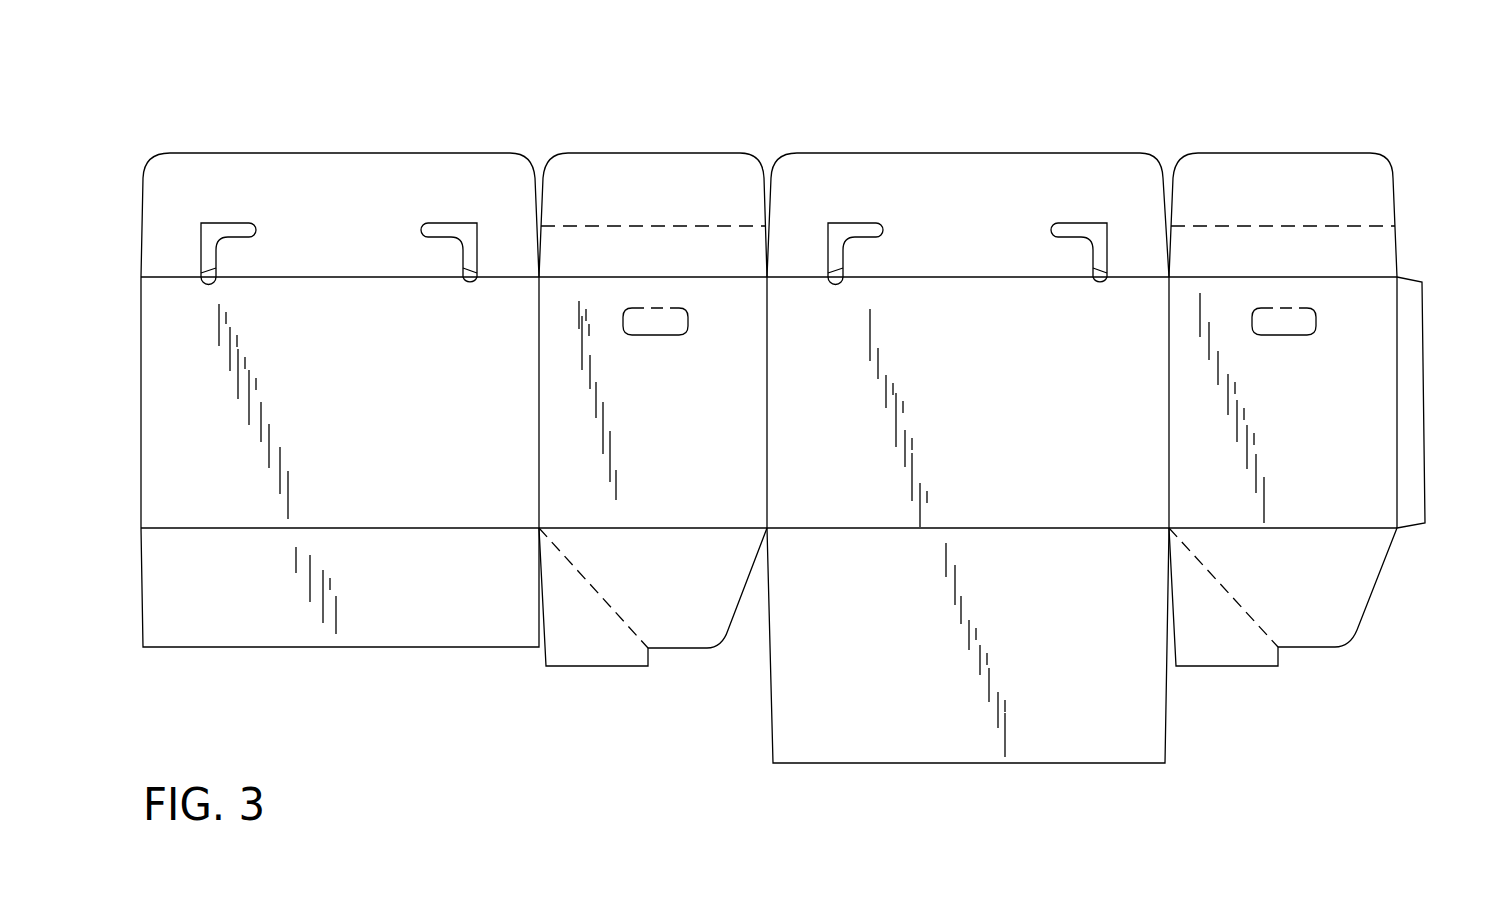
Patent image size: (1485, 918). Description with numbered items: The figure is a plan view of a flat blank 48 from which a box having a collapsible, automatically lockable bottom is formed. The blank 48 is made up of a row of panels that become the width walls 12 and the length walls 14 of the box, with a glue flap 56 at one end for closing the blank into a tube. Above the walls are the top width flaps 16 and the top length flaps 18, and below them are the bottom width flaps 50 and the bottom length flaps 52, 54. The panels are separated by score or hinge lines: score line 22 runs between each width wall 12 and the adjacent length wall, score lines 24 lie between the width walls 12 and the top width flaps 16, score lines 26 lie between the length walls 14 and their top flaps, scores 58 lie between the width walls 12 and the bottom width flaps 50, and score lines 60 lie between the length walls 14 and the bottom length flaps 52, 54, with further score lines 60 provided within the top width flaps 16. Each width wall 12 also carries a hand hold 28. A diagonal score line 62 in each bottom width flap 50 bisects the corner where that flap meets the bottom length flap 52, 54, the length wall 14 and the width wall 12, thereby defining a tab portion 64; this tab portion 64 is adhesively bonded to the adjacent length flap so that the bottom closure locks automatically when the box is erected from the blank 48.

The width wall 12 is at (669, 422).
The length wall 14 is at (357, 413).
The top width flap 16 is at (675, 153).
The top length flap 18 is at (883, 111).
The score line 22 is at (539, 380).
The score line 24 is at (660, 277).
The score line 26 is at (318, 277).
The hand hold 28 is at (1303, 335).
The blank 48 is at (1023, 138).
The bottom width flap 50 is at (622, 667).
The bottom length flap 52 is at (343, 648).
The bottom length flap 54 is at (1045, 764).
The glue flap 56 is at (1421, 390).
The score 58 is at (652, 528).
The score line 60 is at (606, 226).
The score line 62 is at (620, 608).
The tab portion 64 is at (597, 637).